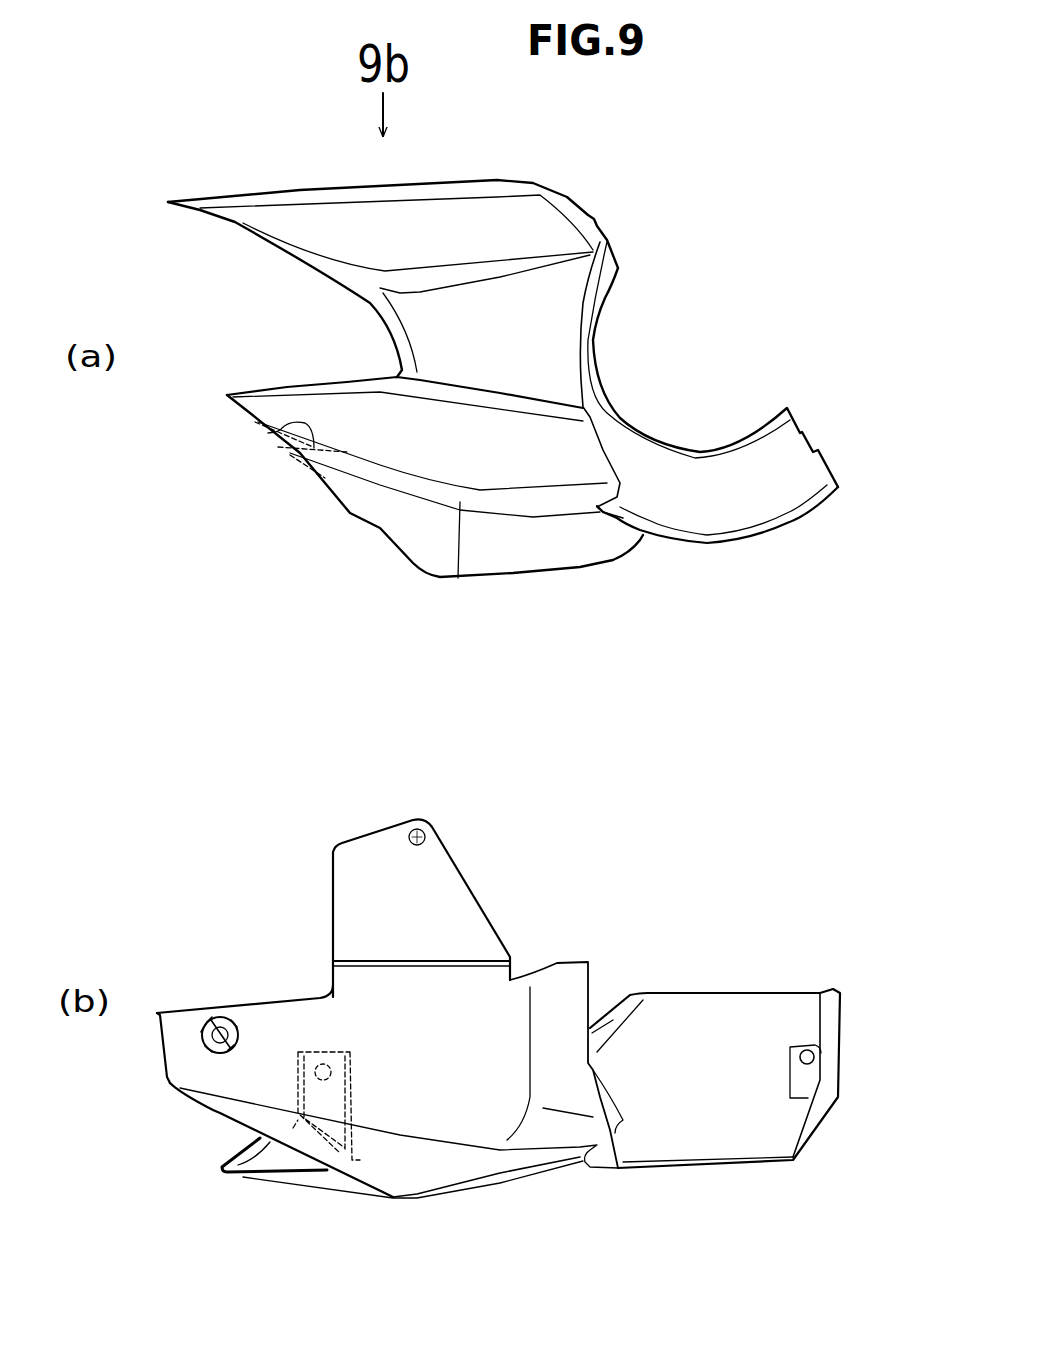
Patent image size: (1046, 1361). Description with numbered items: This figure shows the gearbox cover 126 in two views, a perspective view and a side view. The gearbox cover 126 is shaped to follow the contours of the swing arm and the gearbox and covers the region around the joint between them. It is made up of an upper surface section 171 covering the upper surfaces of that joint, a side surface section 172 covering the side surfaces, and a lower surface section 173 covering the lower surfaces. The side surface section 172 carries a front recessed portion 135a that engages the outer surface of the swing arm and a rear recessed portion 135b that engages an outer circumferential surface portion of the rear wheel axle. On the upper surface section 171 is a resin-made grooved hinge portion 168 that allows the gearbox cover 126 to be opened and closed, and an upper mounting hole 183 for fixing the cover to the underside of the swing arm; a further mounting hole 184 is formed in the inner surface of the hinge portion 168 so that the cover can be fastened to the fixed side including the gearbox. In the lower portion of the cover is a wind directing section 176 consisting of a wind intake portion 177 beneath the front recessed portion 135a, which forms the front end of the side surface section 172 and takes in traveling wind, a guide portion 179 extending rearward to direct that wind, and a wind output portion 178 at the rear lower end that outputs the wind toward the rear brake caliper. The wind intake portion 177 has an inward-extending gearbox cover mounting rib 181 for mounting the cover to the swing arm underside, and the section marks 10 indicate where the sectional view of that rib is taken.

The gearbox cover 126 is at (602, 205).
The upper surface section 171 is at (312, 190).
The side surface section 172 is at (475, 320).
The front recessed portion 135a is at (380, 310).
The rear recessed portion 135b is at (597, 346).
The gearbox cover mounting rib 181 is at (268, 433).
The section line of FIG. 10 is at (326, 540).
The wind intake portion 177 is at (356, 520).
The wind directing section 176 is at (412, 568).
The guide portion 179 is at (458, 582).
The lower surface section 173 is at (523, 575).
The wind output portion 178 is at (570, 572).
The mounting hole 184 is at (426, 832).
The resin-made grooved hinge portion 168 is at (333, 963).
The upper mounting hole 183 is at (213, 1027).